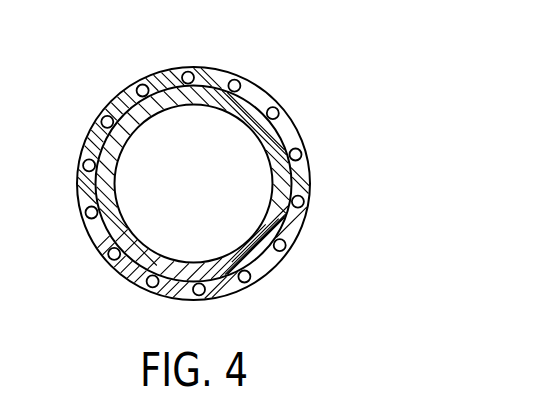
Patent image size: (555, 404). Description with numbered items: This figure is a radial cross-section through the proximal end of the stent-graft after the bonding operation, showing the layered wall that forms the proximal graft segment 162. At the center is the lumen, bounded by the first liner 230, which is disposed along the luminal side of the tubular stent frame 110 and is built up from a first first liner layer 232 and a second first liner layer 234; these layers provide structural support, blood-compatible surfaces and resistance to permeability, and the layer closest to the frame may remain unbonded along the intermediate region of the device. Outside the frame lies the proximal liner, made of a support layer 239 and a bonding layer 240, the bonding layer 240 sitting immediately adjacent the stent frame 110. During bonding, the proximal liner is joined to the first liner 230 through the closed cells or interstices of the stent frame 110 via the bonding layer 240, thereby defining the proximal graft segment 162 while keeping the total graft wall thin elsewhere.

The stent frame 110 is at (130, 87).
The proximal graft segment 162 is at (307, 235).
The first liner 230 is at (273, 162).
The first first liner layer 232 is at (191, 106).
The second first liner layer 234 is at (157, 90).
The support layer 239 is at (86, 216).
The bonding layer 240 is at (250, 93).